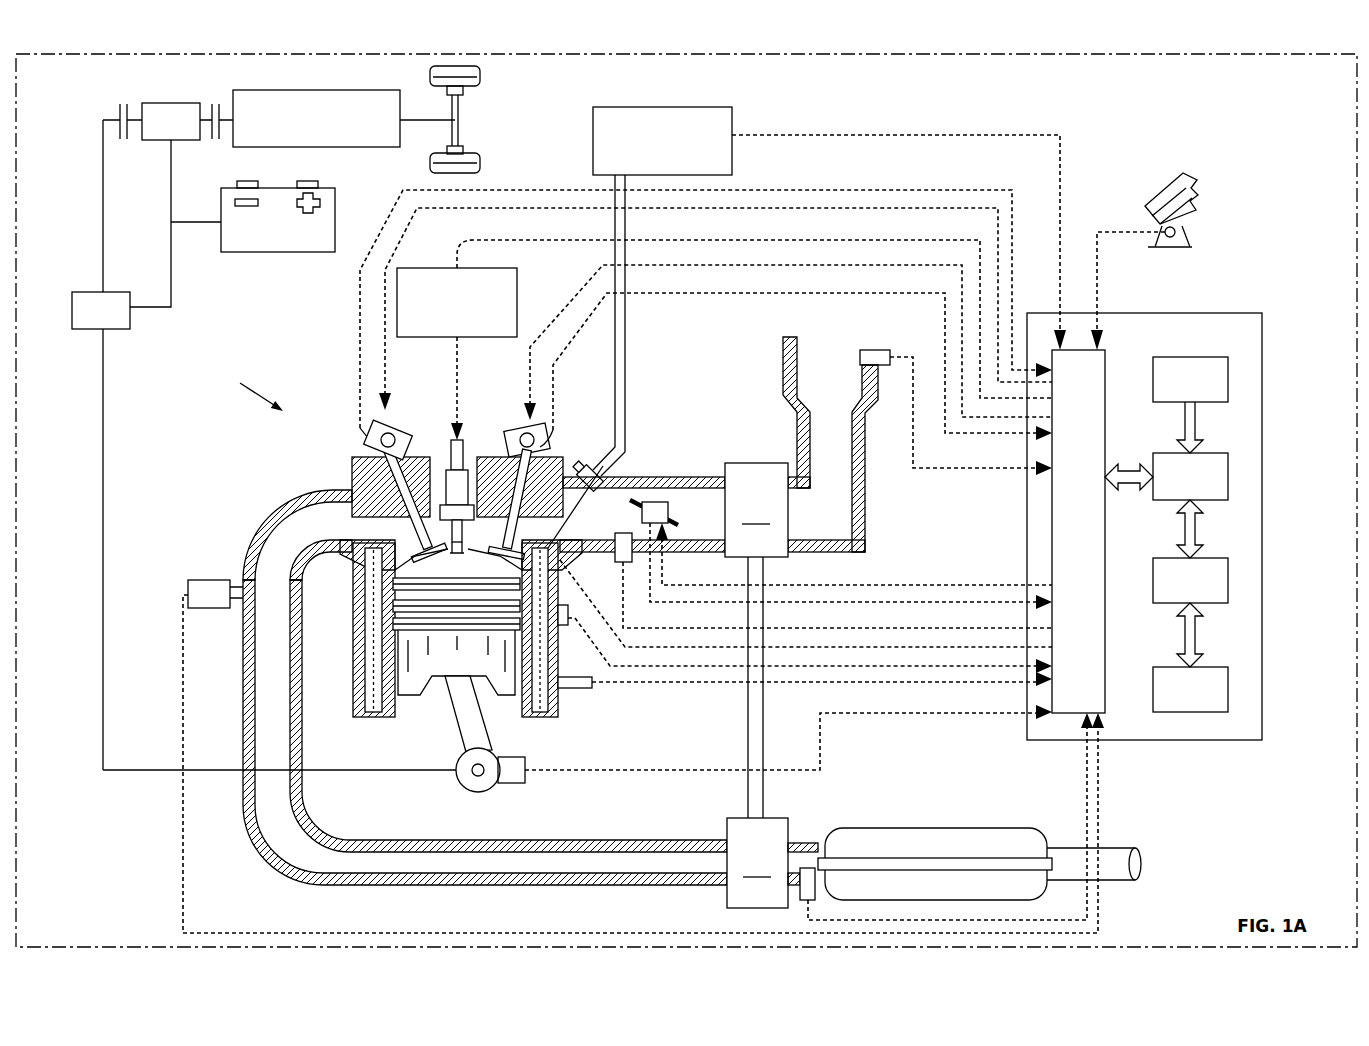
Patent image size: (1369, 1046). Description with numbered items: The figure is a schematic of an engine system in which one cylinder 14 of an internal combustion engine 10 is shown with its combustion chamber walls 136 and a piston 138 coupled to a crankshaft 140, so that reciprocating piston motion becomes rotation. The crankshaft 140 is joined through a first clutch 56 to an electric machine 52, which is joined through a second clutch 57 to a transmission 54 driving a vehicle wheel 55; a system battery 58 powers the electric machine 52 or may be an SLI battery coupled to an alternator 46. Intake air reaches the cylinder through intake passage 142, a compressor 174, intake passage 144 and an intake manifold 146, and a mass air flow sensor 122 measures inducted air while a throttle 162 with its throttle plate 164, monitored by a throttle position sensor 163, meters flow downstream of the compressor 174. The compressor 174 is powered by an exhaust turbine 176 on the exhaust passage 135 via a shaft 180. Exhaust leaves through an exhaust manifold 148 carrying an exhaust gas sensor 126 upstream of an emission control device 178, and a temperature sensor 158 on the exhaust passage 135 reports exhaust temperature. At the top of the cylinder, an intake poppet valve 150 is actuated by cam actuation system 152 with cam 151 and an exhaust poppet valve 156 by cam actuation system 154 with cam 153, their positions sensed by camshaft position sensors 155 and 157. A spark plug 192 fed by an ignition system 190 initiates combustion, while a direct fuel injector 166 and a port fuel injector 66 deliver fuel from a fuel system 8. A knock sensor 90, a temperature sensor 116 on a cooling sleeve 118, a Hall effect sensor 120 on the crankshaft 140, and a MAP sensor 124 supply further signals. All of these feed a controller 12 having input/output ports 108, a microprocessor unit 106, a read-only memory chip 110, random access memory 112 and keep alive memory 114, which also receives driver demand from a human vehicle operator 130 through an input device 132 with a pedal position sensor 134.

The fuel system 8 is at (700, 107).
The internal combustion engine 10 is at (394, 467).
The controller 12 is at (1262, 316).
The cylinder 14 is at (385, 567).
The alternator 46 is at (72, 325).
The electric machine 52 is at (160, 103).
The transmission 54 is at (378, 147).
The vehicle wheel 55 is at (430, 77).
The first clutch 56 is at (119, 108).
The second clutch 57 is at (212, 108).
The system battery 58 is at (270, 252).
The port fuel injector 66 is at (586, 472).
The knock sensor 90 is at (578, 690).
The microprocessor unit 106 is at (1228, 472).
The input/output ports 108 is at (1105, 355).
The read-only memory chip 110 is at (1228, 375).
The random access memory 112 is at (1228, 580).
The keep alive memory 114 is at (1228, 688).
The temperature sensor 116 is at (566, 626).
The cooling sleeve 118 is at (550, 720).
The Hall effect sensor 120 is at (515, 783).
The mass air flow sensor 122 is at (880, 350).
The MAP sensor 124 is at (630, 580).
The exhaust gas sensor 126 is at (188, 583).
The human vehicle operator 130 is at (1200, 195).
The input device 132 is at (1150, 210).
The pedal position sensor 134 is at (1185, 236).
The exhaust passage 135 is at (642, 842).
The combustion chamber walls 136 is at (385, 722).
The piston 138 is at (440, 690).
The crankshaft 140 is at (465, 788).
The intake passage 142 is at (816, 385).
The intake passage 144 is at (686, 525).
The intake manifold 146 is at (596, 525).
The exhaust manifold 148 is at (306, 531).
The intake poppet valve 150 is at (472, 485).
The cam 151 is at (518, 437).
The cam actuation system 152 is at (528, 390).
The cam 153 is at (404, 437).
The cam actuation system 154 is at (388, 382).
The camshaft position sensor 155 is at (548, 445).
The exhaust poppet valve 156 is at (355, 492).
The camshaft position sensor 157 is at (375, 450).
The temperature sensor 158 is at (802, 898).
The throttle 162 is at (665, 503).
The throttle position sensor 163 is at (656, 548).
The throttle plate 164 is at (646, 503).
The direct fuel injector 166 is at (532, 545).
The compressor 174 is at (756, 510).
The exhaust turbine 176 is at (772, 863).
The emission control device 178 is at (920, 828).
The shaft 180 is at (765, 780).
The ignition system 190 is at (410, 268).
The spark plug 192 is at (452, 482).